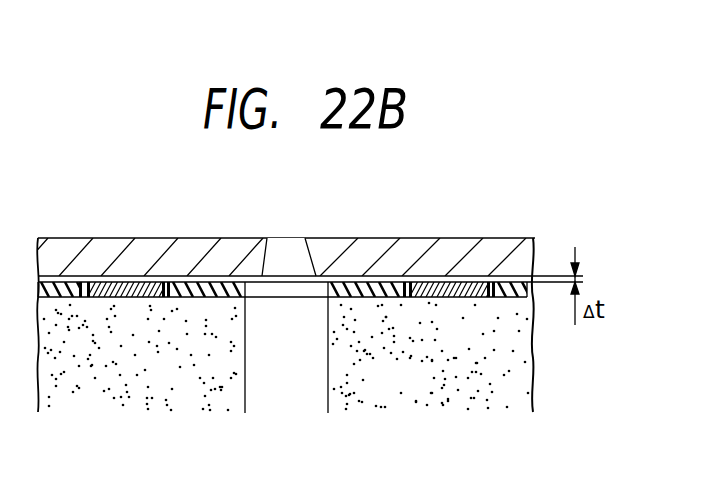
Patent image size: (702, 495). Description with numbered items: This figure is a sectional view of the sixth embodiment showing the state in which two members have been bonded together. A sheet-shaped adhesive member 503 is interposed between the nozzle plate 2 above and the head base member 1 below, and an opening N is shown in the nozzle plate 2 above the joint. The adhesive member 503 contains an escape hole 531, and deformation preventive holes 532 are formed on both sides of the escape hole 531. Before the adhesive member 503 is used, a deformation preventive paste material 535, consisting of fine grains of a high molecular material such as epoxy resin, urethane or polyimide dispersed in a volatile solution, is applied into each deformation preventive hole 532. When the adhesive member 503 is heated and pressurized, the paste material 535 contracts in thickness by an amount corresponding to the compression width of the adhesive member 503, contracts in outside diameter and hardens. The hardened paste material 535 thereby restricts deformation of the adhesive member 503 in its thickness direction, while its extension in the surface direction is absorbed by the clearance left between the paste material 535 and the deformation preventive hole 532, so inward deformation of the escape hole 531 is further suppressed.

The head base member 1 is at (95, 315).
The nozzle plate 2 is at (157, 258).
The notch N is at (262, 270).
The sheet-shaped adhesive member 503 is at (388, 282).
The escape hole 531 is at (285, 287).
The deformation preventive hole 532 is at (493, 282).
The deformation preventive paste material 535 is at (465, 282).